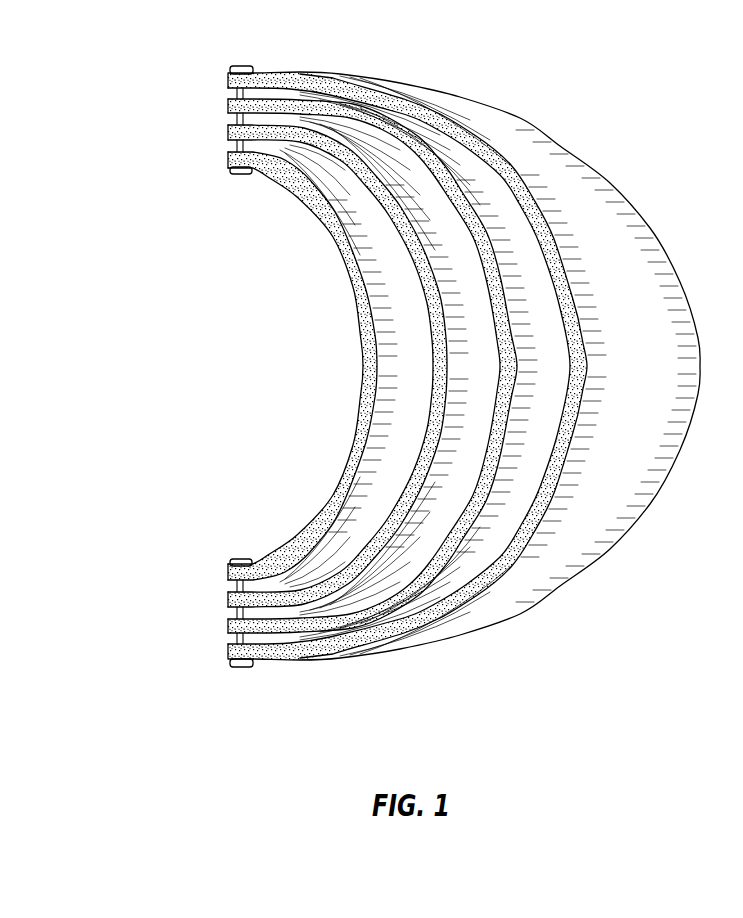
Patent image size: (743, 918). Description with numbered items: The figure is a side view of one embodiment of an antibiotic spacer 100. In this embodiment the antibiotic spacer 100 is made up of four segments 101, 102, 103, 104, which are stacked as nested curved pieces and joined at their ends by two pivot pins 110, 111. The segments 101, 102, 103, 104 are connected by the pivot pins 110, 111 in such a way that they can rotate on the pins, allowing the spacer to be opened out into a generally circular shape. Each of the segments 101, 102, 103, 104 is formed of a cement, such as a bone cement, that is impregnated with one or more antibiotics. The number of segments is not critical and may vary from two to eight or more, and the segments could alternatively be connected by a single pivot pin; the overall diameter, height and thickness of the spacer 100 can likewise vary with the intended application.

The antibiotic spacer 100 is at (610, 56).
The segment 101 is at (513, 597).
The segment 102 is at (410, 603).
The segment 103 is at (347, 593).
The segment 104 is at (287, 577).
The pivot pin 110 is at (232, 171).
The pivot pin 111 is at (232, 562).